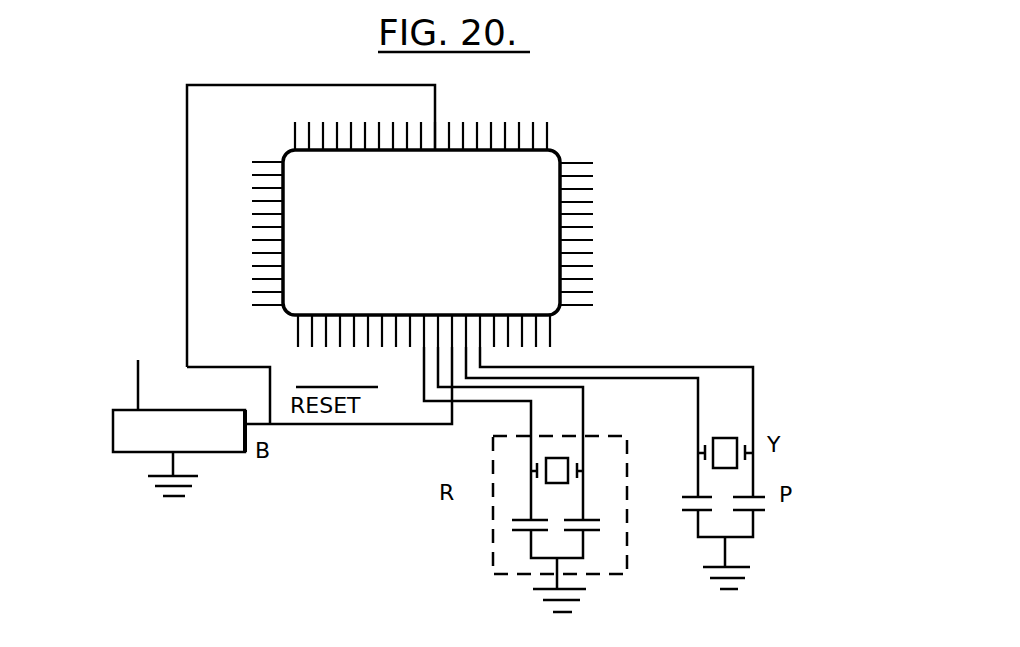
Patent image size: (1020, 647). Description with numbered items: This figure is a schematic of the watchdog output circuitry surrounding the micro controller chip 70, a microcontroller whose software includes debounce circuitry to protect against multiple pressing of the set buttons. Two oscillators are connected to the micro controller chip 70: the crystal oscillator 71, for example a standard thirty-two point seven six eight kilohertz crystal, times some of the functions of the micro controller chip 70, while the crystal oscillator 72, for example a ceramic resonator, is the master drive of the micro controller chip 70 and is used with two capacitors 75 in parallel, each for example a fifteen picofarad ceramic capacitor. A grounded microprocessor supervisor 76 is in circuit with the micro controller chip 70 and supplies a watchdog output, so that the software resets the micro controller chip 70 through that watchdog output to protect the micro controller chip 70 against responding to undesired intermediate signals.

The micro controller chip 70 is at (433, 248).
The crystal oscillator 71 is at (722, 452).
The crystal oscillator 72 is at (556, 472).
The capacitors 75 is at (688, 503).
The microprocessor supervisor 76 is at (126, 455).